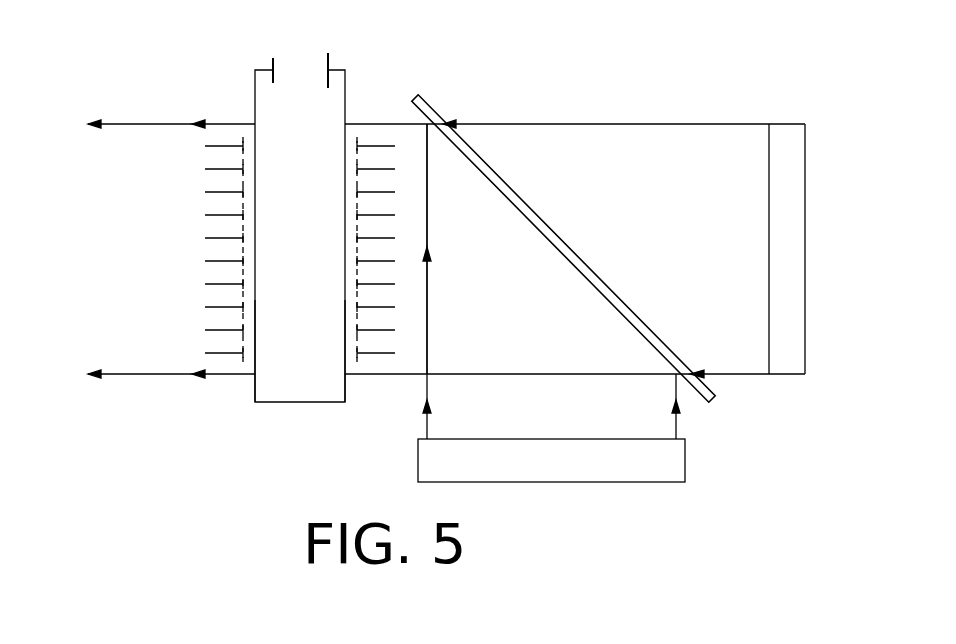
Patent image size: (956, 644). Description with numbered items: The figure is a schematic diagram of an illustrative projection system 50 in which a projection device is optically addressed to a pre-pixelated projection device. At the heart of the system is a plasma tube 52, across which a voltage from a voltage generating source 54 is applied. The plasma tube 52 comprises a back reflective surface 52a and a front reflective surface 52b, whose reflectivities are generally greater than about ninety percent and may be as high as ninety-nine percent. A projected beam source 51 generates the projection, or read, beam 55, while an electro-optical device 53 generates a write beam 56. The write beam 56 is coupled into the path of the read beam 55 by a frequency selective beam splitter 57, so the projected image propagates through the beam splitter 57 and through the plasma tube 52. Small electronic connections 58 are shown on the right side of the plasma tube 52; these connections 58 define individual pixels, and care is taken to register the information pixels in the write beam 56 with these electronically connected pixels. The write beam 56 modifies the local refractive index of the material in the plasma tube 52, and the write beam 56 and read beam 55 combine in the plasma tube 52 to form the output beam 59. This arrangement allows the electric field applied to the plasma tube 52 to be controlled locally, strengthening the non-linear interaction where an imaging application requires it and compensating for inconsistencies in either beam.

The projection system 50 is at (95, 79).
The projected beam source 51 is at (805, 243).
The plasma tube 52 is at (255, 106).
The back reflective surface 52a is at (345, 384).
The front reflective surface 52b is at (255, 384).
The electro-optical device 53 is at (685, 458).
The voltage generating source 54 is at (287, 56).
The read beam 55 is at (728, 124).
The write beam 56 is at (427, 430).
The frequency selective beam splitter 57 is at (526, 212).
The electronic connections 58 is at (373, 157).
The combined beam 59 is at (117, 124).